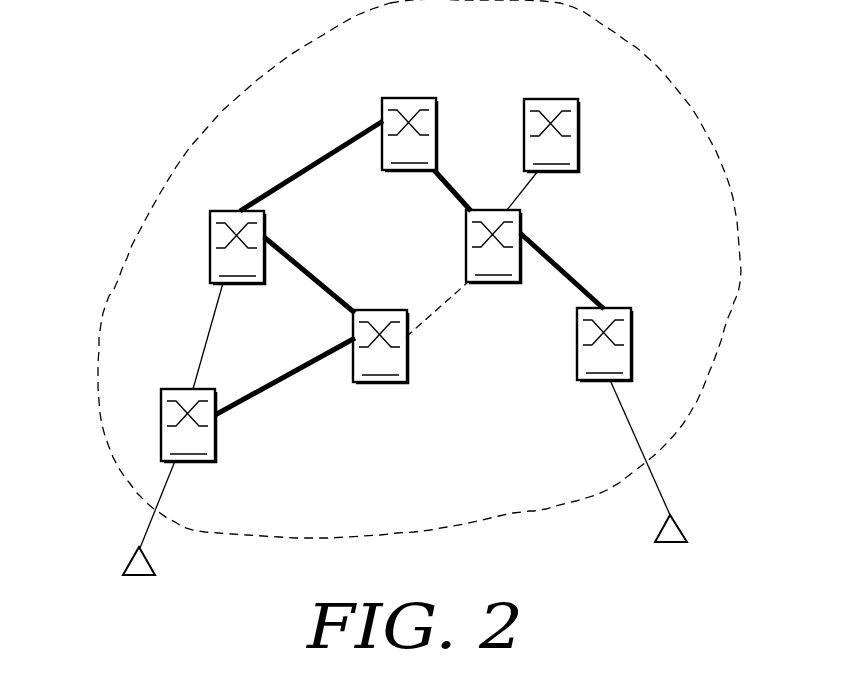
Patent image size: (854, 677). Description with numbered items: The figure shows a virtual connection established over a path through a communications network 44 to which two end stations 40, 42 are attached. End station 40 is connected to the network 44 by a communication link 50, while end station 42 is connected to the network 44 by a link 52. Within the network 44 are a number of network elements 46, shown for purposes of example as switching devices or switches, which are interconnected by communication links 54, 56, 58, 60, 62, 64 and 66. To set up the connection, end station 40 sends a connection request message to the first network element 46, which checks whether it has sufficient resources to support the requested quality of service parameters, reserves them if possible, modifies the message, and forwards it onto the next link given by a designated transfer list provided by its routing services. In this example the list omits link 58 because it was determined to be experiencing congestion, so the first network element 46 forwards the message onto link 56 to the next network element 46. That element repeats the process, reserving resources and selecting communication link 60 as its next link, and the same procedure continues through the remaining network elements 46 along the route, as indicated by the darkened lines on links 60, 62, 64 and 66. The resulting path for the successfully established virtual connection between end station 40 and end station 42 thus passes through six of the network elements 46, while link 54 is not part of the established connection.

The end station 40 is at (128, 558).
The end station 42 is at (680, 523).
The communications network 44 is at (302, 45).
The network element 46 is at (413, 98).
The communication link 50 is at (160, 520).
The link 52 is at (650, 480).
The communication link 54 is at (217, 310).
The communication link 56 is at (293, 368).
The link 58 is at (433, 315).
The communication link 60 is at (318, 267).
The communication link 62 is at (332, 150).
The communication link 64 is at (452, 178).
The communication link 66 is at (555, 262).